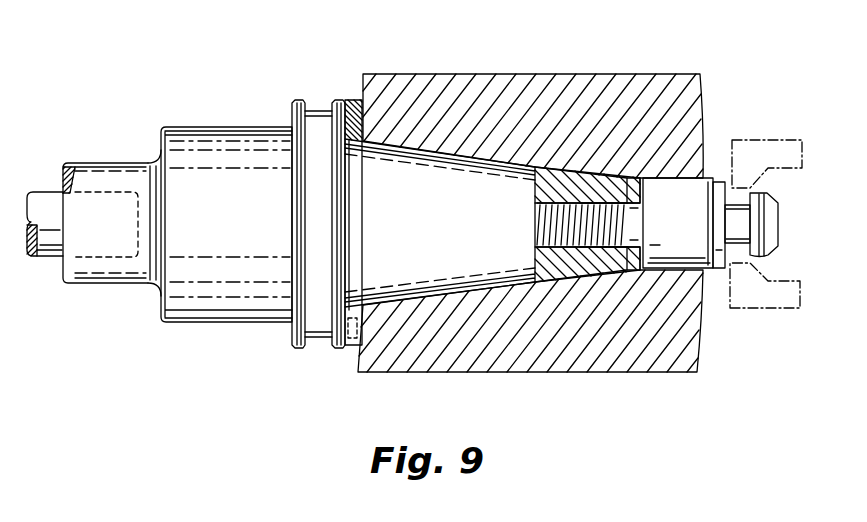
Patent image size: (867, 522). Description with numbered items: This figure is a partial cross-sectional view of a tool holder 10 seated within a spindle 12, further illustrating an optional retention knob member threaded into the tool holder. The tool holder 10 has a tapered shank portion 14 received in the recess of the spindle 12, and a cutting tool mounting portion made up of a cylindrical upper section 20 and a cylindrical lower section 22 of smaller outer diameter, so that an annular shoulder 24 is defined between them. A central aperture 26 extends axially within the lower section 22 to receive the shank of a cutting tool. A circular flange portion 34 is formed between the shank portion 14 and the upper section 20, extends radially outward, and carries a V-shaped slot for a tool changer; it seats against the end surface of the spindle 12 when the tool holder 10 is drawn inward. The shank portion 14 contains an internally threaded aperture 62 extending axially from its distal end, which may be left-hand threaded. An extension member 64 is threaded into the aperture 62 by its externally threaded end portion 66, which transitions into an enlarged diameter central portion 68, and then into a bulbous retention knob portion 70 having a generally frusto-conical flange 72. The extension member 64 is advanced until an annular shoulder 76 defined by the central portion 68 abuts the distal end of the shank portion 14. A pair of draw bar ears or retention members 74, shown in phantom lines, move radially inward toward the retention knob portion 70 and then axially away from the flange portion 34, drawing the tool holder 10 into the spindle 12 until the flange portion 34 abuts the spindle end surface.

The tool holder 10 is at (193, 215).
The spindle 12 is at (716, 88).
The shank portion 14 is at (466, 304).
The upper section 20 is at (247, 321).
The lower section 22 is at (100, 276).
The annular shoulder 24 is at (160, 300).
The central aperture 26 is at (75, 252).
The flange portion 34 is at (320, 88).
The internally threaded aperture 62 is at (541, 272).
The extension member 64 is at (792, 208).
The externally threaded end portion 66 is at (598, 265).
The central portion 68 is at (666, 224).
The retention knob portion 70 is at (745, 246).
The frusto-conical shaped flange 72 is at (762, 222).
The retention members 74 is at (770, 140).
The annular shoulder 76 is at (627, 176).